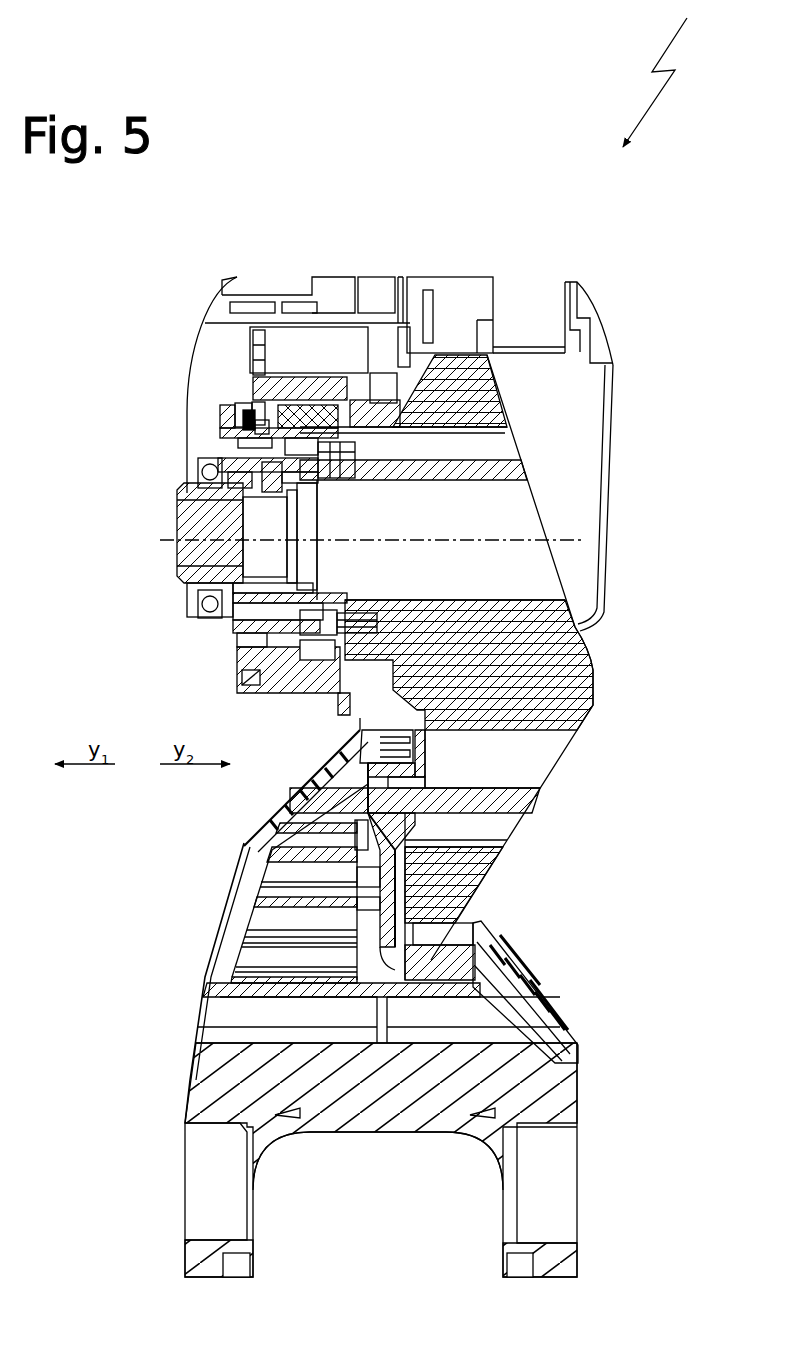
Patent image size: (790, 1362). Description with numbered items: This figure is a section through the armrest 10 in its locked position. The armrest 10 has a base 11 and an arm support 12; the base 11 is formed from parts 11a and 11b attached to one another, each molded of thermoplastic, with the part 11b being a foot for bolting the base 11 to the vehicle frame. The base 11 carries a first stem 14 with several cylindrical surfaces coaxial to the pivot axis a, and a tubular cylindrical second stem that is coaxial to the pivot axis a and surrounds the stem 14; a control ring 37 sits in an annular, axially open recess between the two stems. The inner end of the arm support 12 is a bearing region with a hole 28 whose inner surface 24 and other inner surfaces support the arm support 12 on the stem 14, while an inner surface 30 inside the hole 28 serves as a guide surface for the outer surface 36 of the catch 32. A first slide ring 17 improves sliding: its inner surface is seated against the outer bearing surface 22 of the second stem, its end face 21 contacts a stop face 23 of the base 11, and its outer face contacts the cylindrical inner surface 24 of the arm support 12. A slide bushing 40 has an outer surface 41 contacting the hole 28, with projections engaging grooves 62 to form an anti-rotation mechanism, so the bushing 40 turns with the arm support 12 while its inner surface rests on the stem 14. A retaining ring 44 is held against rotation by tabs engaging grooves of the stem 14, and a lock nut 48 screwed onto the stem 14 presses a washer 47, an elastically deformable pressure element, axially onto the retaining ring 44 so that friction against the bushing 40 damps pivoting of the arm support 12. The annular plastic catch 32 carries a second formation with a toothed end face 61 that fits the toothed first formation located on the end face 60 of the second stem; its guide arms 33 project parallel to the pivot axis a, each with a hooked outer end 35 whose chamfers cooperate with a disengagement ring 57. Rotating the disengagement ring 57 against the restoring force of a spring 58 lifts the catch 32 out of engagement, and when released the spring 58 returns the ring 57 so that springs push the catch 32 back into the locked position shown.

The armrest 10 is at (677, 76).
The base 11 is at (595, 652).
The part of the base 11a is at (593, 352).
The part of the base 11b is at (547, 1013).
The arm support 12 is at (305, 345).
The first stem 14 is at (172, 558).
The first slide ring 17 is at (410, 372).
The end face 21 is at (396, 352).
The outer bearing surface 22 is at (340, 715).
The stop face 23 is at (385, 733).
The inner surface 24 is at (340, 395).
The hole 28 is at (172, 470).
The inner surface 30 is at (240, 452).
The catch 32 is at (266, 398).
The guide arms 33 is at (290, 660).
The hooked outer end 35 is at (218, 420).
The outer surface 36 is at (318, 640).
The control ring 37 is at (455, 352).
The slide bushing 40 is at (245, 640).
The outer surface 41 is at (320, 604).
The retaining ring 44 is at (230, 645).
The washer 47 is at (222, 630).
The lock nut 48 is at (205, 597).
The disengagement ring 57 is at (245, 427).
The spring 58 is at (258, 430).
The end face 60 is at (365, 620).
The toothed end face 61 is at (357, 458).
The grooves 62 is at (184, 503).
The pivot axis a is at (167, 535).